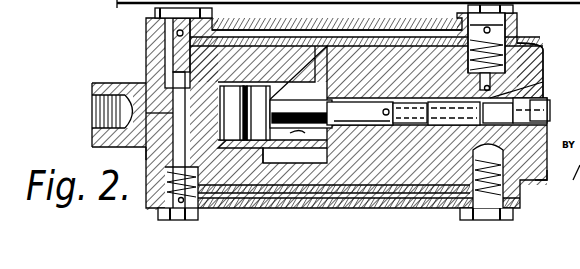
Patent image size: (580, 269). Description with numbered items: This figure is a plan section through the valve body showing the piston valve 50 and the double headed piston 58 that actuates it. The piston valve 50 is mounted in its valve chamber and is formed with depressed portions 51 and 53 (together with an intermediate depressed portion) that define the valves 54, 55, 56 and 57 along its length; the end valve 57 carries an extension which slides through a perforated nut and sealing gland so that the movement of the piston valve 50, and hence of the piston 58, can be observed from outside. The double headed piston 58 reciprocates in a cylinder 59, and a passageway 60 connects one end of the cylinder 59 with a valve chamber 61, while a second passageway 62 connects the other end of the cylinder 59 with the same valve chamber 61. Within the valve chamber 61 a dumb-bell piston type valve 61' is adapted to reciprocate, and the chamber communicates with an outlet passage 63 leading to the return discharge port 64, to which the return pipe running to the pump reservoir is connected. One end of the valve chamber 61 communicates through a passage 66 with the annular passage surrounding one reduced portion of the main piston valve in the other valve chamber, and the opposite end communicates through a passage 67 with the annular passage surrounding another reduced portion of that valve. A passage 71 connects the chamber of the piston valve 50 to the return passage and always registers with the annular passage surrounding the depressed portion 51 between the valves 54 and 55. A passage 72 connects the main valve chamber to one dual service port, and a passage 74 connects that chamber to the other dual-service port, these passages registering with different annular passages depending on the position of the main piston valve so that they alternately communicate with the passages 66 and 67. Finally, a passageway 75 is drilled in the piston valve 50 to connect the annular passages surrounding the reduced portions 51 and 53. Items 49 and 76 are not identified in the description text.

The port 49 is at (299, 135).
The piston valve 50 is at (301, 108).
The depressed portion 51 is at (360, 113).
The depressed portion 53 is at (540, 97).
The valve 54 is at (330, 112).
The valve 55 is at (411, 112).
The valve 56 is at (498, 111).
The valve 57 is at (547, 108).
The double headed piston 58 is at (232, 113).
The cylinder 59 is at (256, 113).
The passageway 60 is at (317, 70).
The valve chamber 61 is at (159, 114).
The dumb-bell piston type valve 61' is at (128, 87).
The second passageway 62 is at (203, 140).
The outlet passage 63 is at (137, 154).
The return discharge port 64 is at (92, 128).
The passage 66 is at (290, 198).
The passage 67 is at (170, 31).
The passage 71 is at (393, 42).
The passage 72 is at (543, 182).
The passage 74 is at (545, 50).
The passageway 75 is at (457, 127).
The rod 76 is at (550, 117).